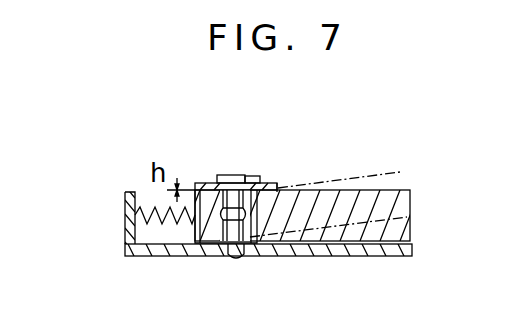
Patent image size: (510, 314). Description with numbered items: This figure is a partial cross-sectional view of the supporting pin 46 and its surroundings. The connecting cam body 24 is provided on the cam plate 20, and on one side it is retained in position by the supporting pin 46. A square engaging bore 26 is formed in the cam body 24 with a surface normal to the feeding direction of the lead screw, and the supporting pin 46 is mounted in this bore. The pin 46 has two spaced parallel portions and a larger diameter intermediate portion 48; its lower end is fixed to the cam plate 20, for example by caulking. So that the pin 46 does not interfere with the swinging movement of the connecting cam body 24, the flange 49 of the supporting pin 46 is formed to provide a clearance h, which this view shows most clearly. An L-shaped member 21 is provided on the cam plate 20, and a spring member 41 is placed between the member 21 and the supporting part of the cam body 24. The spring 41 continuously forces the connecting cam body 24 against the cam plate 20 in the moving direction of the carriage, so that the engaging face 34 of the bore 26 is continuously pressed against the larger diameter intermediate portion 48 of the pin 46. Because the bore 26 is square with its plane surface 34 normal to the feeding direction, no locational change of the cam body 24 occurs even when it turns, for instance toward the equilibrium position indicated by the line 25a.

The cam plate 20 is at (304, 256).
The L-shaped member 21 is at (125, 194).
The connecting cam body 24 is at (397, 190).
The equilibrium position 25a is at (339, 182).
The engaging bore 26 is at (280, 188).
The engaging face 34 is at (238, 258).
The spring member 41 is at (150, 208).
The supporting pin 46 is at (233, 176).
The larger diameter intermediate portion 48 is at (210, 244).
The flange 49 is at (256, 180).